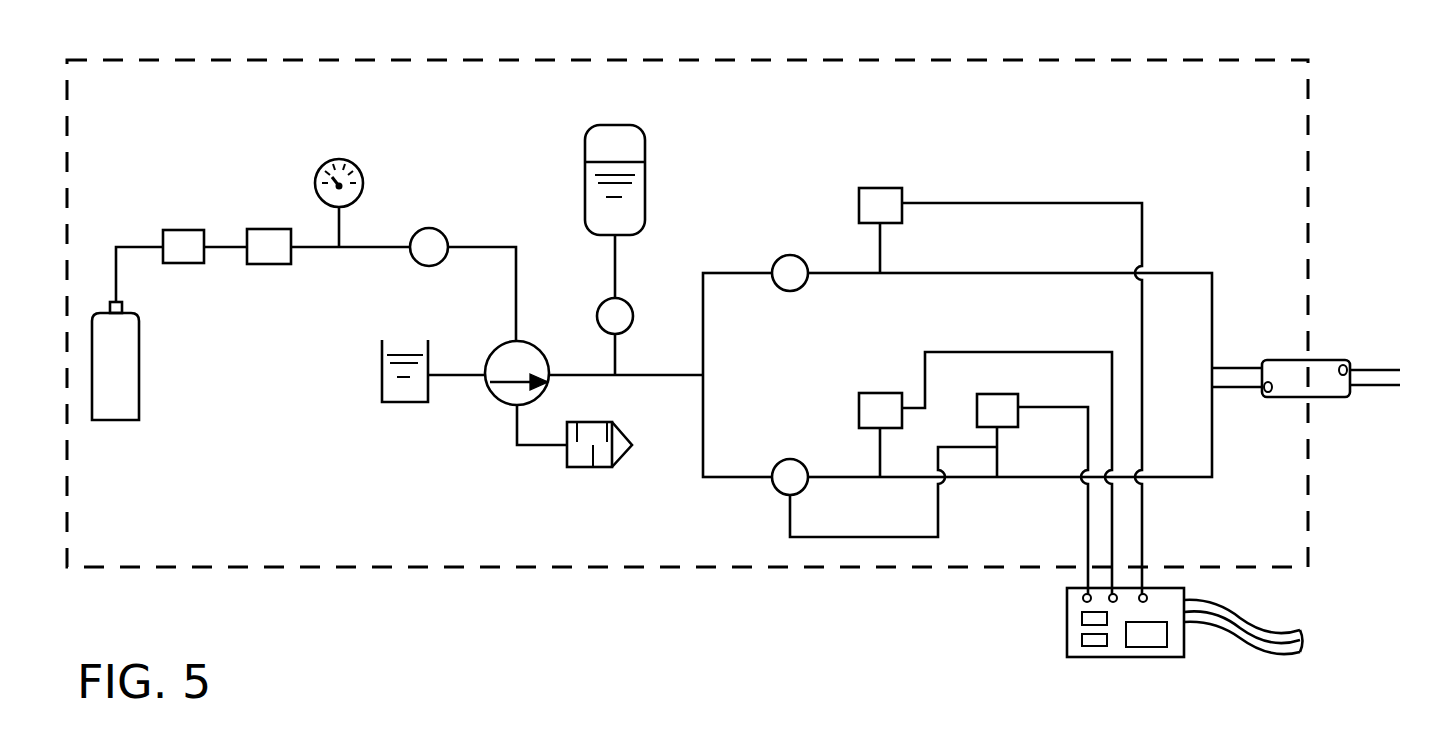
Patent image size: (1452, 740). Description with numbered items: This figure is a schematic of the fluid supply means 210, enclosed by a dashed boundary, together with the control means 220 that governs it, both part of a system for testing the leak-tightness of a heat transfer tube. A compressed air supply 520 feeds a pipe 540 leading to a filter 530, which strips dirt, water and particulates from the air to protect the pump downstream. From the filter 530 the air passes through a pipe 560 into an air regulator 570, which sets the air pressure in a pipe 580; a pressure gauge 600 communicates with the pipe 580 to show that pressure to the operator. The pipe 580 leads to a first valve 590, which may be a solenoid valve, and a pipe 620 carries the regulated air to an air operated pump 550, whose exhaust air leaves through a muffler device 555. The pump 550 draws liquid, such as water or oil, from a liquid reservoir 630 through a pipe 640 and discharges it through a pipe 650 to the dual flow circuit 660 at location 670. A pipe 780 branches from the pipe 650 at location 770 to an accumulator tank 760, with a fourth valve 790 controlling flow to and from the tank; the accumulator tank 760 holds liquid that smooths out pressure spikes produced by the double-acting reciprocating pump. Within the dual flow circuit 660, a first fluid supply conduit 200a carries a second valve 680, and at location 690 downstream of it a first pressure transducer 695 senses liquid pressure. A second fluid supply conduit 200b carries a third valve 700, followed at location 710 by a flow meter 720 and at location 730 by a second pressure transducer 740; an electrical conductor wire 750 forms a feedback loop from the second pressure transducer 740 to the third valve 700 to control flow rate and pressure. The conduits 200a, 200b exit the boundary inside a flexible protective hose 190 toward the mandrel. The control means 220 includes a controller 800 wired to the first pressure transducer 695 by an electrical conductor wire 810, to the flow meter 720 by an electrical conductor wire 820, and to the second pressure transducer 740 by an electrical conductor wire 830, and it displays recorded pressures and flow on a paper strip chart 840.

The flexible protective hose 190 is at (1330, 372).
The first fluid supply conduit 200a is at (740, 273).
The second fluid supply conduit 200b is at (722, 477).
The fluid supply means 210 is at (990, 40).
The control means 220 is at (1262, 601).
The compressed air supply 520 is at (132, 405).
The filter 530 is at (180, 233).
The pipe 540 is at (143, 247).
The air operated pump 550 is at (499, 358).
The muffler device 555 is at (610, 467).
The pipe 560 is at (232, 248).
The air regulator 570 is at (268, 264).
The pipe 580 is at (378, 247).
The first valve 590 is at (440, 233).
The pressure gauge 600 is at (333, 163).
The pipe 620 is at (516, 273).
The liquid reservoir 630 is at (382, 377).
The pipe 640 is at (468, 376).
The pipe 650 is at (638, 375).
The dual flow circuit 660 is at (722, 499).
The location 670 is at (703, 377).
The second valve 680 is at (805, 287).
The location 690 is at (882, 268).
The first pressure transducer 695 is at (893, 188).
The third valve 700 is at (790, 495).
The location 710 is at (880, 470).
The flow meter 720 is at (873, 397).
The location 730 is at (1000, 473).
The second pressure transducer 740 is at (1002, 397).
The electrical conductor wire 750 is at (850, 540).
The accumulator tank 760 is at (638, 150).
The location 770 is at (613, 367).
The pipe 780 is at (615, 267).
The fourth valve 790 is at (622, 300).
The controller 800 is at (1067, 602).
The electrical conductor wire 810 is at (1142, 320).
The electrical conductor wire 820 is at (955, 352).
The electrical conductor wire 830 is at (1087, 522).
The paper strip chart 840 is at (1273, 652).